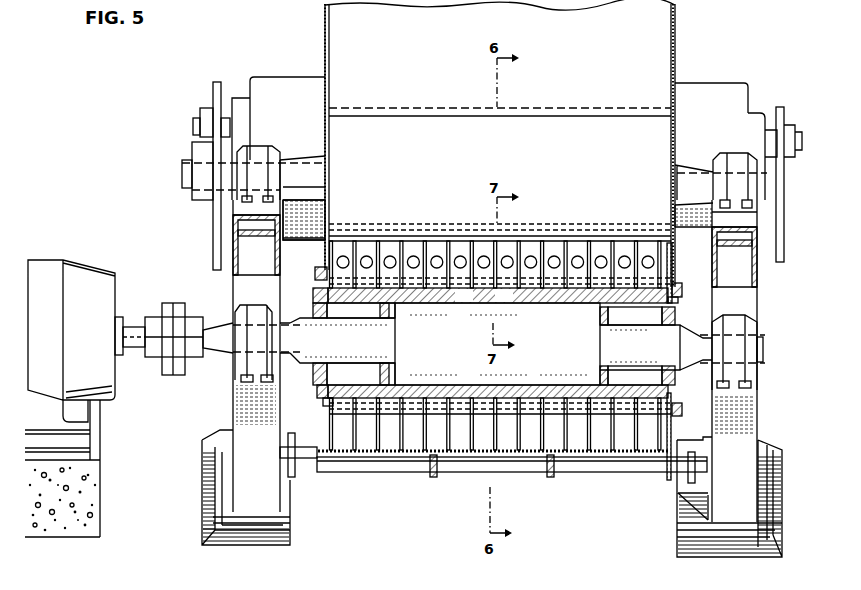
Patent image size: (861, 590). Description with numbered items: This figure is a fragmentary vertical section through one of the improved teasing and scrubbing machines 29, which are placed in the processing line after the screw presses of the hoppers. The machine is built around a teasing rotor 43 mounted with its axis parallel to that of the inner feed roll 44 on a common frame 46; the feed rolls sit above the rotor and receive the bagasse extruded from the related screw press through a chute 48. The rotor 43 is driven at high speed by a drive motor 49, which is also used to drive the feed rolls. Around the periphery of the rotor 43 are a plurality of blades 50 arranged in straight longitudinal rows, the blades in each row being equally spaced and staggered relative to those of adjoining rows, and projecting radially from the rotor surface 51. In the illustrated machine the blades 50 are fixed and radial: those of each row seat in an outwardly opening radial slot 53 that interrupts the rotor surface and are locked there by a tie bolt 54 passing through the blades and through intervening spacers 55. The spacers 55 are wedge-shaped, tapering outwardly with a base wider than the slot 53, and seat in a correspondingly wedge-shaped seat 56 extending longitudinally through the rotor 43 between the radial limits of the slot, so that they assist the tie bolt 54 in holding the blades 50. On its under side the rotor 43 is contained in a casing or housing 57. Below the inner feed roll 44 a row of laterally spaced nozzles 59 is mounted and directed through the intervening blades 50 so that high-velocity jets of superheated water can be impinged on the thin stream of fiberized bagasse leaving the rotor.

The teasing and scrubbing machine 29 is at (180, 160).
The teasing rotor 43 is at (678, 284).
The inner feed roll 44 is at (596, 191).
The frame 46 is at (758, 291).
The chute 48 is at (676, 38).
The drive motor 49 is at (273, 76).
The blades 50 is at (395, 238).
The rotor surface 51 is at (555, 421).
The radial slot 53 is at (464, 298).
The tie bolt 54 is at (682, 290).
The spacers 55 is at (492, 319).
The wedge-shaped seat 56 is at (504, 298).
The casing or housing 57 is at (605, 462).
The nozzles 59 is at (460, 255).